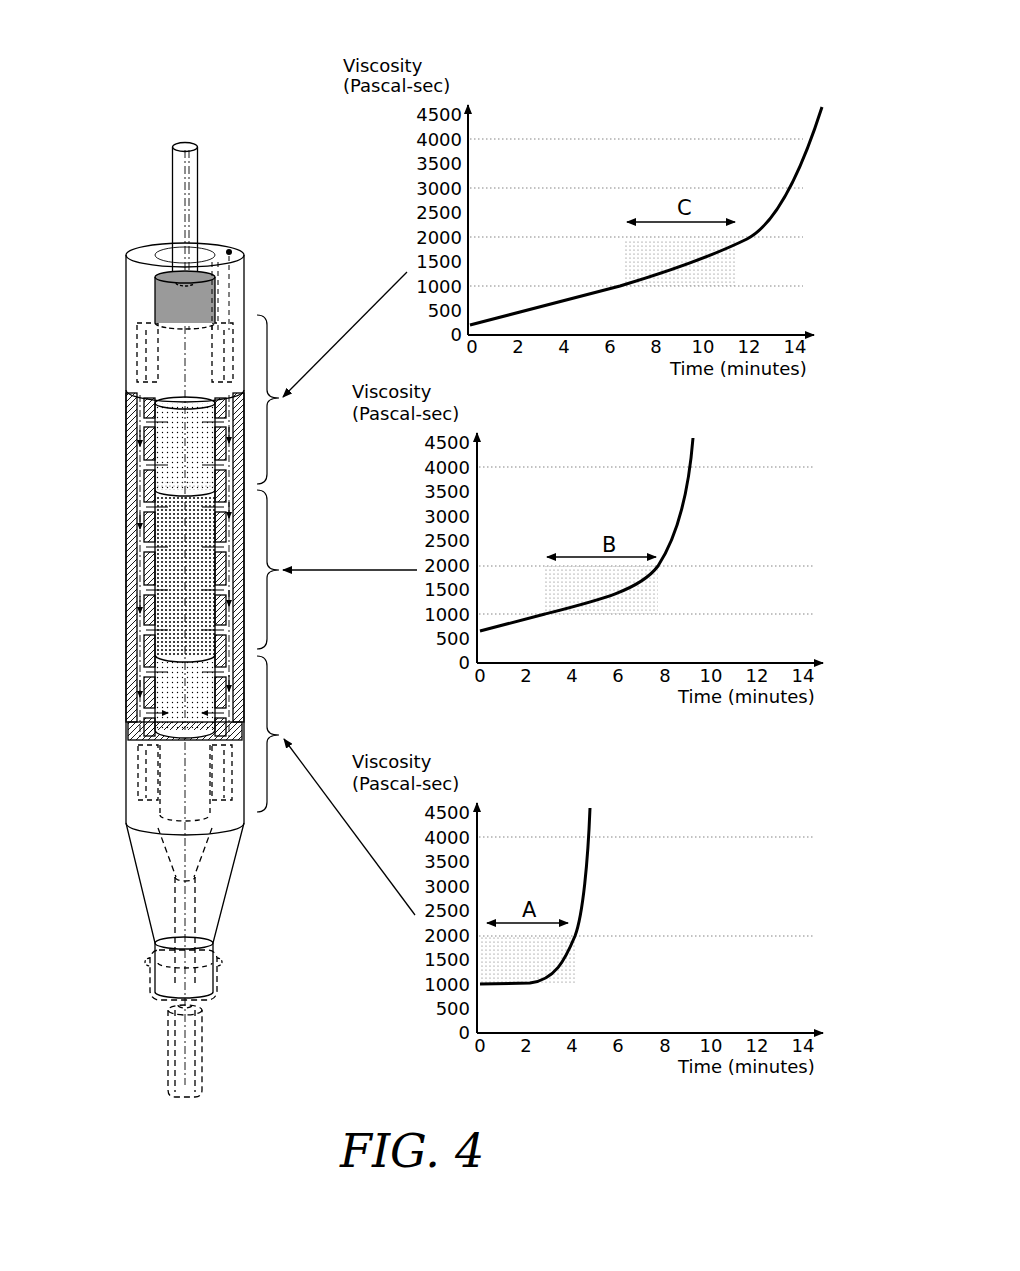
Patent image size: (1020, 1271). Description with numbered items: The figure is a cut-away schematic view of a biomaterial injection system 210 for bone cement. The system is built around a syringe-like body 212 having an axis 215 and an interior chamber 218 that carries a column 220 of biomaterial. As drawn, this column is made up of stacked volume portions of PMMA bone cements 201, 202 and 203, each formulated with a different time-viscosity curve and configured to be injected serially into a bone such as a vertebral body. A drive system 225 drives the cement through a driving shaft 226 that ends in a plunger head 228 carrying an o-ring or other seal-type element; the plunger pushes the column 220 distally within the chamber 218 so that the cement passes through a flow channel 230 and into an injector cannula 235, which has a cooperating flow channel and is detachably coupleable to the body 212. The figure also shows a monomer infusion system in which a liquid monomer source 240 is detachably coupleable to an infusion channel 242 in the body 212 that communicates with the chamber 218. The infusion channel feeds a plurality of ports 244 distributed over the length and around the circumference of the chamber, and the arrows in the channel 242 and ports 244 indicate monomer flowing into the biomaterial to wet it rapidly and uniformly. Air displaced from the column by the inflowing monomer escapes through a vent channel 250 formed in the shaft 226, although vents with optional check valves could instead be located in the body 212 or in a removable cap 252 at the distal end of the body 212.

The biomaterial injection system 210 is at (259, 47).
The syringe-like body 212 is at (85, 703).
The axis 215 is at (183, 857).
The interior chamber 218 is at (165, 478).
The column of biomaterial 220 is at (165, 410).
The drive system 225 is at (185, 143).
The driving shaft 226 is at (180, 185).
The plunger head 228 is at (170, 305).
The flow channel 230 is at (175, 927).
The injector cannula 235 is at (168, 1068).
The liquid monomer source 240 is at (229, 237).
The infusion channel 242 is at (145, 560).
The ports 244 is at (153, 673).
The vent channel 250 is at (188, 235).
The removable cap 252 is at (150, 978).
The PMMA bone cement 201 is at (172, 701).
The PMMA bone cement 202 is at (172, 576).
The PMMA bone cement 203 is at (172, 451).